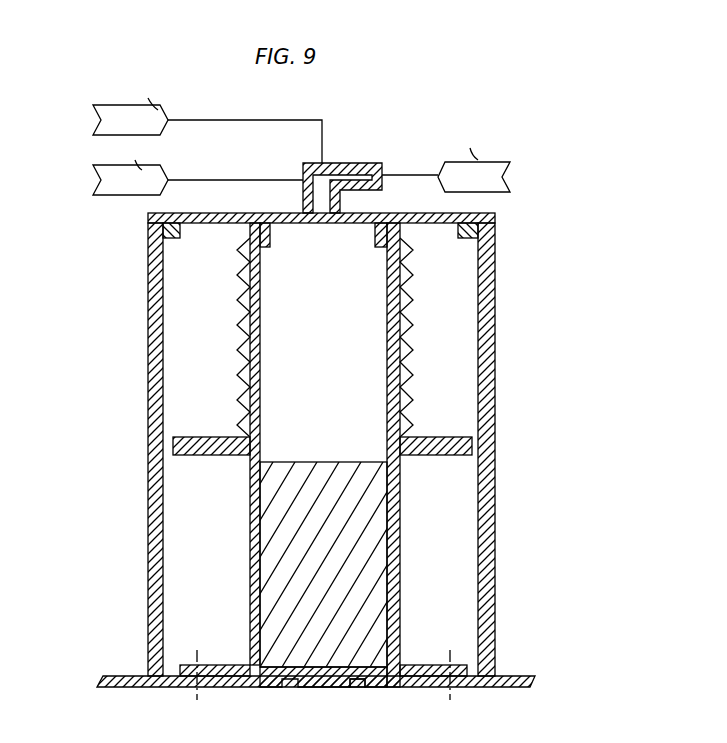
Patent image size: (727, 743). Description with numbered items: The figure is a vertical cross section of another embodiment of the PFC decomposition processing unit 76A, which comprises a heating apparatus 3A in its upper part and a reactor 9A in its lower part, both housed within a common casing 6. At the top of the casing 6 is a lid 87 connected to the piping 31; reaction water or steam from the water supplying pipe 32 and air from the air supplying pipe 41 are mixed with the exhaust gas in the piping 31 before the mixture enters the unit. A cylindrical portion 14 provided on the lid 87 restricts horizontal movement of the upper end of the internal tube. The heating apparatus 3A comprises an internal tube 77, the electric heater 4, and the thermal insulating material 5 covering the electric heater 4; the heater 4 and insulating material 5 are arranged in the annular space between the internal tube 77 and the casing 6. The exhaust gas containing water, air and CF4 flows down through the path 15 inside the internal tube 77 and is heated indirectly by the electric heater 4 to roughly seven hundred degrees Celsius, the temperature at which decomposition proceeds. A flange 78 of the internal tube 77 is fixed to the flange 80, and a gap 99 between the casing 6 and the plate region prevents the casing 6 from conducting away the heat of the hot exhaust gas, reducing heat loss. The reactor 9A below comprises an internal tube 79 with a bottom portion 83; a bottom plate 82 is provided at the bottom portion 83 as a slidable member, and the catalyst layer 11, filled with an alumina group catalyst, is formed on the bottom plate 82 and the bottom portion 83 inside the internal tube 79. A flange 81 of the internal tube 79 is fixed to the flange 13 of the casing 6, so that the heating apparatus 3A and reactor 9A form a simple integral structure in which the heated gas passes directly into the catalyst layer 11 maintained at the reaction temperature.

The heating apparatus 3A is at (93, 212).
The reactor 9A is at (93, 448).
The electric heater 4 is at (400, 287).
The thermal insulating material 5 is at (455, 257).
The casing 6 is at (495, 320).
The catalyst layer 11 is at (268, 549).
The flange 13 is at (522, 678).
The cylindrical portion 14 is at (270, 238).
The path 15 is at (323, 342).
The piping 31 is at (345, 163).
The water supplying pipe 32 is at (243, 120).
The air supplying pipe 41 is at (203, 180).
The PFC decomposition processing unit 76A is at (548, 372).
The internal tube 77 is at (387, 348).
The flange 78 is at (488, 422).
The internal tube 79 is at (400, 572).
The flange 80 is at (441, 458).
The flange 81 is at (440, 665).
The bottom plate 82 is at (316, 689).
The bottom portion 83 is at (360, 689).
The lid 87 is at (400, 213).
The gap 99 is at (472, 444).